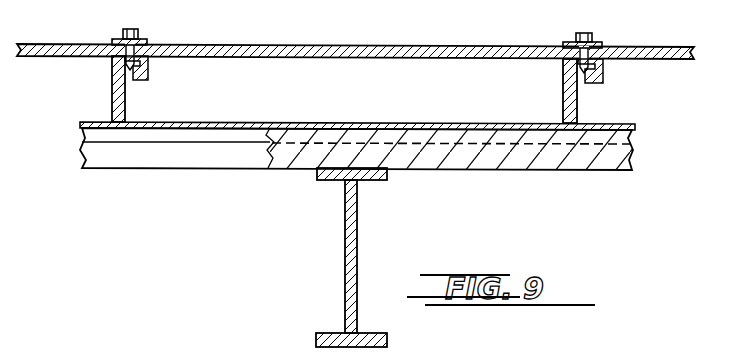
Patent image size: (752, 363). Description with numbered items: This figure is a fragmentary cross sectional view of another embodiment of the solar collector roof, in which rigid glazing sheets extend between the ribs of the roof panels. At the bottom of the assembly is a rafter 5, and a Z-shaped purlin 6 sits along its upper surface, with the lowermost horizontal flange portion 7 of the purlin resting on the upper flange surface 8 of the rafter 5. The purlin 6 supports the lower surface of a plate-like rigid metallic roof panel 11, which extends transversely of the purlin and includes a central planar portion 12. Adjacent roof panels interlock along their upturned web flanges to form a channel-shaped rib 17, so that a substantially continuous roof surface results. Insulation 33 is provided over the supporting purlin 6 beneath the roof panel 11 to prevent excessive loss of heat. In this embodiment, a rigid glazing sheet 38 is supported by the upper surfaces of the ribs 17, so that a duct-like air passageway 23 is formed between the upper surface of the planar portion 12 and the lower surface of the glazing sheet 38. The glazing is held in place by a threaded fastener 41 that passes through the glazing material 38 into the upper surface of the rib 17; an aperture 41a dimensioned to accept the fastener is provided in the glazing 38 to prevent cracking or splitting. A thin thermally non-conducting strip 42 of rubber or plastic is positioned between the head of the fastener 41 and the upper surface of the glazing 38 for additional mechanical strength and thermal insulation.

The rafter 5 is at (345, 258).
The Z-shaped purlin 6 is at (181, 158).
The lowermost horizontal flange portion 7 is at (413, 169).
The upper flange surface 8 is at (318, 172).
The roof panel 11 is at (200, 122).
The central planar portion 12 is at (256, 121).
The channel-shaped rib 17 is at (112, 88).
The air passageway 23 is at (356, 101).
The insulation 33 is at (548, 169).
The rigid glazing sheet 38 is at (314, 49).
The threaded fastener 41 is at (139, 32).
The aperture 41a is at (148, 62).
The thermally non-conducting strip 42 is at (114, 40).